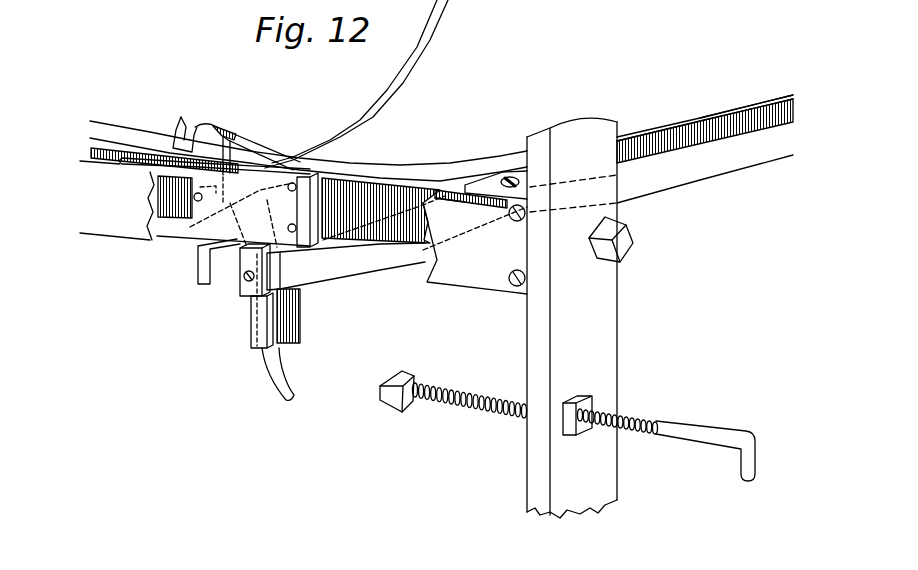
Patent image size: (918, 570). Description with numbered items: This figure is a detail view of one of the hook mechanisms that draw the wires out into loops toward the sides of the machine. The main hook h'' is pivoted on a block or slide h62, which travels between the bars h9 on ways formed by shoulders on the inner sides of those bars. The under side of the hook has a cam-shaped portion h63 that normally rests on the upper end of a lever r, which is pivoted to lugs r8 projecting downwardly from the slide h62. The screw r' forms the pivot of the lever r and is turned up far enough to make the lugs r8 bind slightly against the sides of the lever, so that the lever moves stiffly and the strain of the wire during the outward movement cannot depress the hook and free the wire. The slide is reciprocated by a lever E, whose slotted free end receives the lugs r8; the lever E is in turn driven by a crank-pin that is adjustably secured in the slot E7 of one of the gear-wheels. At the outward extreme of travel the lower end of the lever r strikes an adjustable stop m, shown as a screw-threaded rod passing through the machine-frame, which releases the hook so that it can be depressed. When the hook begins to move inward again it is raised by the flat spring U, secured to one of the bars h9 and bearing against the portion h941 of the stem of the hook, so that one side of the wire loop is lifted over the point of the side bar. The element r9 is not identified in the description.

The lever E is at (170, 272).
The slot E7 is at (742, 112).
The flat spring U is at (333, 160).
The hook h'' is at (194, 116).
The portion of the hook stem h941 is at (223, 124).
The cam-shaped portion h63 is at (220, 200).
The block or slide h62 is at (225, 218).
The bar h9 is at (390, 167).
The adjustable stop m is at (522, 175).
The screw r' is at (236, 278).
The lug r8 is at (256, 323).
The hatched bar r9 is at (298, 328).
The lever r is at (265, 374).